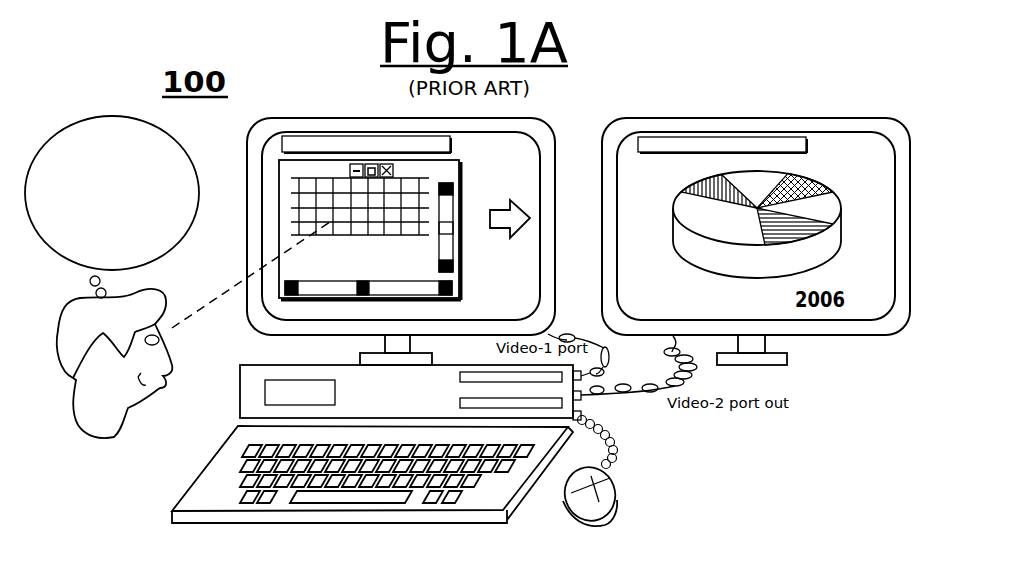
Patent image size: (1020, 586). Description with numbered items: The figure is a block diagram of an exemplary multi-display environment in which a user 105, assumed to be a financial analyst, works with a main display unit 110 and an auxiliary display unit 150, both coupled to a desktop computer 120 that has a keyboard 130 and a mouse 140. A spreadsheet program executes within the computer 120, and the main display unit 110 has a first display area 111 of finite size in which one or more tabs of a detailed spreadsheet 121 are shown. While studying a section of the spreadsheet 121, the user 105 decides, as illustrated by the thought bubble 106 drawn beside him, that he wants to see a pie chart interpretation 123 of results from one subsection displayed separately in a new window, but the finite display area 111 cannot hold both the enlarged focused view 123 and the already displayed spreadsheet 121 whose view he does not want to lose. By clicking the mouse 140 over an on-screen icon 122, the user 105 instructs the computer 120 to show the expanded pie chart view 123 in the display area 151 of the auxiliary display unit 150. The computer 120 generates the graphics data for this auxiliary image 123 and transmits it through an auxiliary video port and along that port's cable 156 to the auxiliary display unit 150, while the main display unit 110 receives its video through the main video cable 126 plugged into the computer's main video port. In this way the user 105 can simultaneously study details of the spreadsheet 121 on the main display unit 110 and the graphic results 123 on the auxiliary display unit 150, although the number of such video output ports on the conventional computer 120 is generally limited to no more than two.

The user 105 is at (115, 377).
The thought bubble 106 is at (112, 197).
The main display unit 110 is at (381, 226).
The first display area 111 is at (273, 316).
The desktop computer 120 is at (248, 408).
The spreadsheet 121 is at (467, 182).
The on-screen icon 122 is at (500, 231).
The pie chart interpretation 123 is at (675, 252).
The main video cable 126 is at (569, 332).
The keyboard 130 is at (495, 518).
The mouse 140 is at (577, 528).
The auxiliary display unit 150 is at (756, 229).
The display area of the auxiliary display unit 151 is at (855, 312).
The auxiliary video cable 156 is at (637, 397).